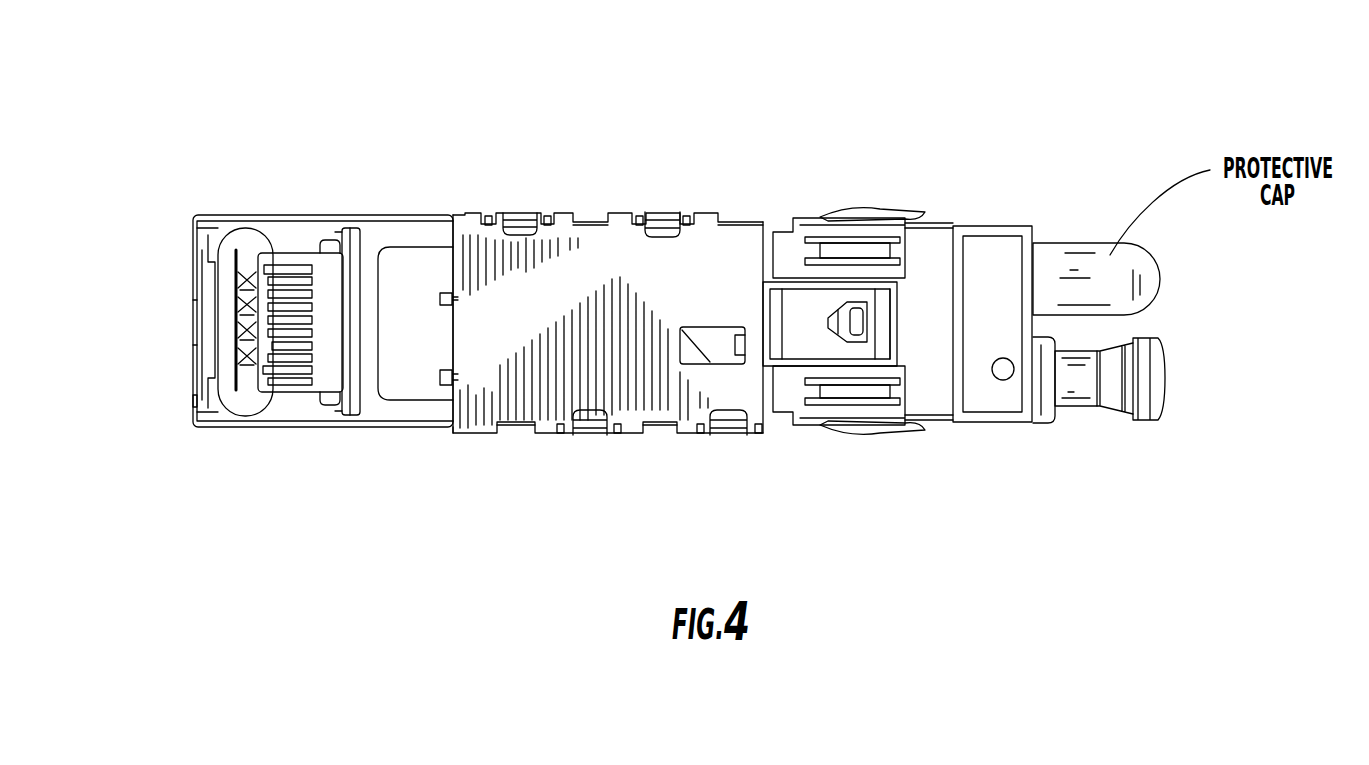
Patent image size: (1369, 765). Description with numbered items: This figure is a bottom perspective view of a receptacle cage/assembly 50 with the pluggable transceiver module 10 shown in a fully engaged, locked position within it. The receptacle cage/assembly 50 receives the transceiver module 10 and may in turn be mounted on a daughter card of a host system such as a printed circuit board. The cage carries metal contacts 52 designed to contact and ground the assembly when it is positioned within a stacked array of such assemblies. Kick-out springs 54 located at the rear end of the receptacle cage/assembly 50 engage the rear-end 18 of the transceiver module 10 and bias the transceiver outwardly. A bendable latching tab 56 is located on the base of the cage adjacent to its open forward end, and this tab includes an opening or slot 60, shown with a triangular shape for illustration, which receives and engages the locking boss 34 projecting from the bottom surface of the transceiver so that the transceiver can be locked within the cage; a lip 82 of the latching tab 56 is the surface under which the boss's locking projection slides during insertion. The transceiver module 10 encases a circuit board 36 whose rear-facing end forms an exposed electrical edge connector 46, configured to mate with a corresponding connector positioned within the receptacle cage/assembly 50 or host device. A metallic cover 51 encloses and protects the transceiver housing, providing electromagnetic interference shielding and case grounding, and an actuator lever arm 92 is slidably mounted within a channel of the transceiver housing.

The transceiver module 10 is at (990, 400).
The rear-end 18 is at (235, 330).
The locking boss 34 is at (860, 332).
The circuit board 36 is at (317, 270).
The electrical edge connector 46 is at (282, 265).
The receptacle cage/assembly 50 is at (480, 400).
The metallic cover 51 is at (373, 405).
The metal contacts 52 is at (857, 212).
The kick-out springs 54 is at (207, 235).
The bendable latching tab 56 is at (788, 305).
The opening or slot 60 is at (830, 320).
The lip 82 is at (897, 315).
The actuator lever arm 92 is at (1088, 407).